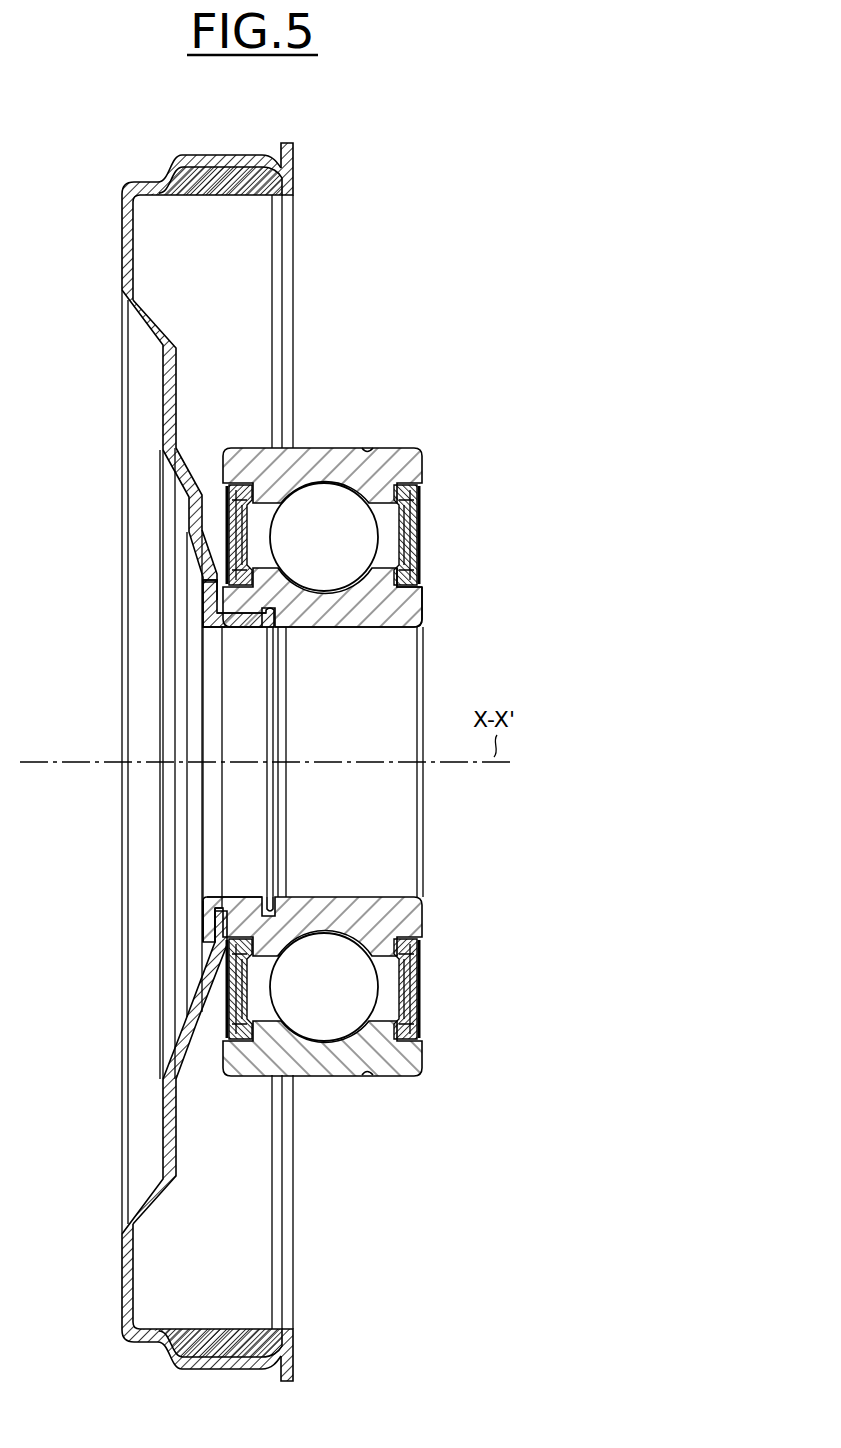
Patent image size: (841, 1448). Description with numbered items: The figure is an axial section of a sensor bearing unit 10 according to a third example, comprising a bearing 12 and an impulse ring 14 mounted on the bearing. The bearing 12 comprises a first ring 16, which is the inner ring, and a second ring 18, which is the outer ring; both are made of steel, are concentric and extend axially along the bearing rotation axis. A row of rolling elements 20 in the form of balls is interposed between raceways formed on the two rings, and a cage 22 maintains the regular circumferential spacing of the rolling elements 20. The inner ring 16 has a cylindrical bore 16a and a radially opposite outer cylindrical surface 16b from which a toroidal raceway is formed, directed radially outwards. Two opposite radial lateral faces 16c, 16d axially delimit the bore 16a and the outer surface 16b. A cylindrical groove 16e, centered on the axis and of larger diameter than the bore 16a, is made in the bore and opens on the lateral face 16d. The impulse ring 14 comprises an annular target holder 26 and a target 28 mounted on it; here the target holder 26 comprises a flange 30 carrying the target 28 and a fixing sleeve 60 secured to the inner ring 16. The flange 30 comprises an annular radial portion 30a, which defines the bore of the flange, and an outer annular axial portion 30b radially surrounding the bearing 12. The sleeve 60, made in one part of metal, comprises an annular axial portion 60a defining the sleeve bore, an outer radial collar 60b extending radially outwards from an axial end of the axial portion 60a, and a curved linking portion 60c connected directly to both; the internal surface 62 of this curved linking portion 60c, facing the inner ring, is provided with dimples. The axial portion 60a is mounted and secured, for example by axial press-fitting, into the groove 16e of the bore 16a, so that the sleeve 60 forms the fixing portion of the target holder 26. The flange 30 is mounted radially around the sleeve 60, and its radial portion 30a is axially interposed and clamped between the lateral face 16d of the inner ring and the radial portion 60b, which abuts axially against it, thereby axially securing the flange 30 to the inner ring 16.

The sensor bearing unit 10 is at (437, 293).
The bearing 12 is at (433, 442).
The impulse ring 14 is at (118, 272).
The first ring 16 is at (405, 910).
The bore 16a is at (355, 630).
The outer cylindrical surface 16b is at (398, 550).
The radial lateral face 16c is at (423, 606).
The radial lateral face 16d is at (214, 924).
The cylindrical groove 16e is at (245, 893).
The second ring 18 is at (413, 1060).
The rolling elements 20 is at (337, 996).
The cage 22 is at (387, 1005).
The target holder 26 is at (155, 1150).
The target 28 is at (284, 184).
The flange 30 is at (177, 1040).
The annular radial portion 30a is at (200, 525).
The outer annular axial portion 30b is at (223, 162).
The fixing sleeve 60 is at (243, 631).
The annular axial portion 60a is at (205, 634).
The outer radial collar 60b is at (212, 583).
The curved linking portion 60c is at (205, 624).
The internal surface 62 is at (203, 596).